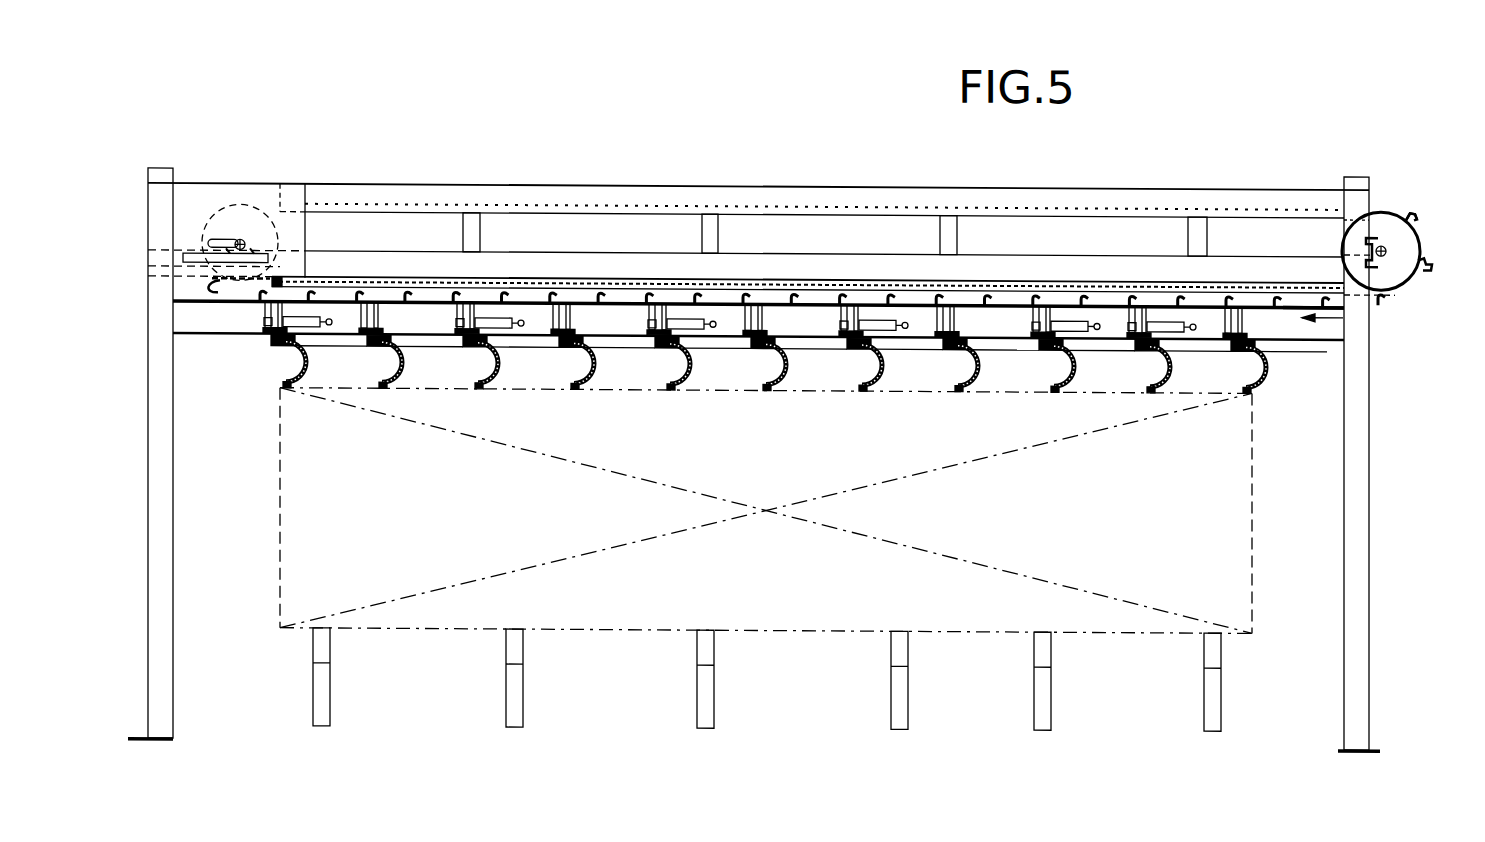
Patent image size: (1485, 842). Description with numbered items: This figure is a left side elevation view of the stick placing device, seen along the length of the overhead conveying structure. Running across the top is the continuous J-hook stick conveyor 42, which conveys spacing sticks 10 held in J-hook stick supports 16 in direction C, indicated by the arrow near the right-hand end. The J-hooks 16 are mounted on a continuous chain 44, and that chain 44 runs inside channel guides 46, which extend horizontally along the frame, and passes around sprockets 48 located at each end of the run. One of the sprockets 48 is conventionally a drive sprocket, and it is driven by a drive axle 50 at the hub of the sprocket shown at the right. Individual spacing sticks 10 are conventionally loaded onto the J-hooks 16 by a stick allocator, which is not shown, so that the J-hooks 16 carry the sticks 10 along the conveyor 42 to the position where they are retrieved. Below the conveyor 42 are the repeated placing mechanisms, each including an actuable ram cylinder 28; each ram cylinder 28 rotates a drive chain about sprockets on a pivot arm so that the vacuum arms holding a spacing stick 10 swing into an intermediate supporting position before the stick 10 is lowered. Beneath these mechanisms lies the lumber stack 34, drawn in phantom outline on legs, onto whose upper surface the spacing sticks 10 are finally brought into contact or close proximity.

The spacing stick 10 is at (1283, 302).
The J-hook stick supports 16 is at (1413, 199).
The actuable ram cylinder 28 is at (1165, 321).
The lumber stack 34 is at (1141, 469).
The continuous J-hook stick conveyor 42 is at (1413, 172).
The continuous chain 44 is at (1370, 205).
The channel guides 46 is at (1230, 188).
The sprockets 48 is at (1418, 224).
The drive axle 50 is at (1386, 243).
The direction of stick conveyance C is at (1447, 233).